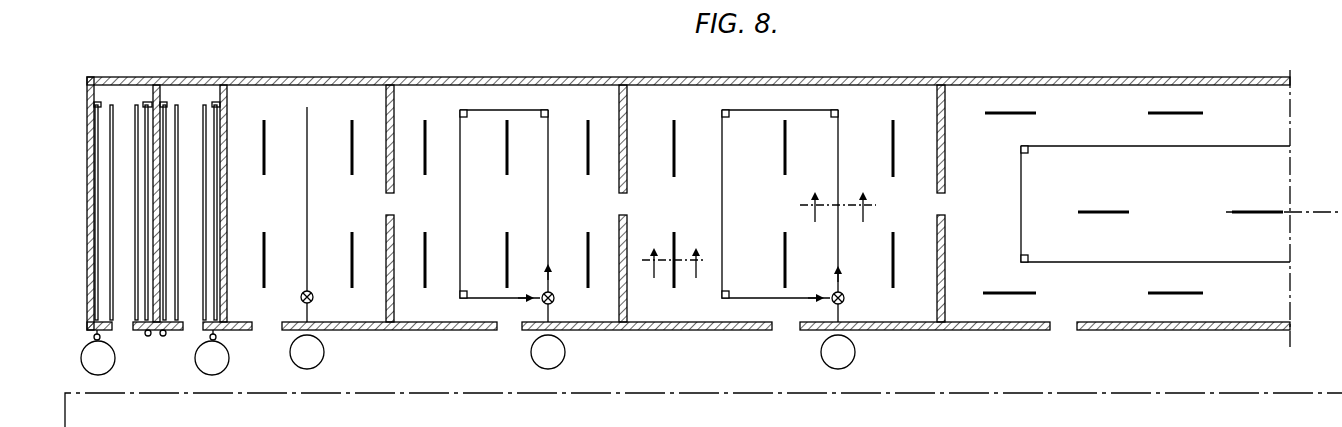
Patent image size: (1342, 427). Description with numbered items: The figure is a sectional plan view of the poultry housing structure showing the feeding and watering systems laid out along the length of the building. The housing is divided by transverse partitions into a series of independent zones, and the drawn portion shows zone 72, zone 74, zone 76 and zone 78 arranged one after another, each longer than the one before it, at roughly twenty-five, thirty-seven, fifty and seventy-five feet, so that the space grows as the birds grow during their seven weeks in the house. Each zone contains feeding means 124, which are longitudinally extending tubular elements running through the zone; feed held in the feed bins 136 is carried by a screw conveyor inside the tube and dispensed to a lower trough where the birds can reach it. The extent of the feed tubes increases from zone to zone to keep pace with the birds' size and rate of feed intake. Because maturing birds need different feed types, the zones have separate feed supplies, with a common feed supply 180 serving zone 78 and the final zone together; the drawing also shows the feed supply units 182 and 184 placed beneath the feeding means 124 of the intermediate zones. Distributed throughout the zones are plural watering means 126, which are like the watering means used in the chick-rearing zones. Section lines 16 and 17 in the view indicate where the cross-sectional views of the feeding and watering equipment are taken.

The zone 72 is at (359, 220).
The zone 74 is at (519, 220).
The zone 76 is at (771, 220).
The zone 78 is at (988, 220).
The feeding means 124 is at (306, 212).
The watering means 126 is at (264, 126).
The feed bin 136 is at (84, 350).
The common feed supply 180 is at (320, 347).
The pump 182 is at (562, 350).
The pump 184 is at (821, 355).
The section line 16- 16 is at (672, 249).
The section line 17- 17 is at (840, 196).